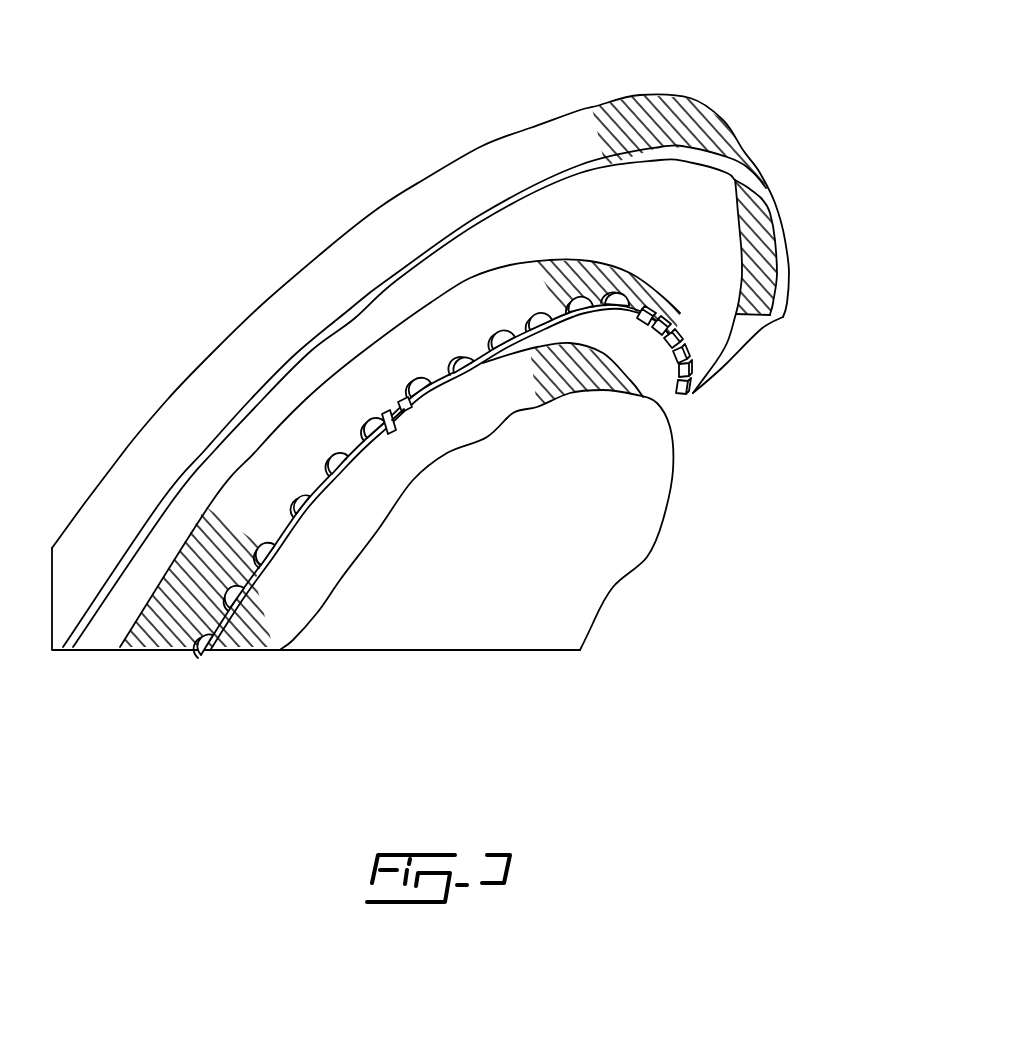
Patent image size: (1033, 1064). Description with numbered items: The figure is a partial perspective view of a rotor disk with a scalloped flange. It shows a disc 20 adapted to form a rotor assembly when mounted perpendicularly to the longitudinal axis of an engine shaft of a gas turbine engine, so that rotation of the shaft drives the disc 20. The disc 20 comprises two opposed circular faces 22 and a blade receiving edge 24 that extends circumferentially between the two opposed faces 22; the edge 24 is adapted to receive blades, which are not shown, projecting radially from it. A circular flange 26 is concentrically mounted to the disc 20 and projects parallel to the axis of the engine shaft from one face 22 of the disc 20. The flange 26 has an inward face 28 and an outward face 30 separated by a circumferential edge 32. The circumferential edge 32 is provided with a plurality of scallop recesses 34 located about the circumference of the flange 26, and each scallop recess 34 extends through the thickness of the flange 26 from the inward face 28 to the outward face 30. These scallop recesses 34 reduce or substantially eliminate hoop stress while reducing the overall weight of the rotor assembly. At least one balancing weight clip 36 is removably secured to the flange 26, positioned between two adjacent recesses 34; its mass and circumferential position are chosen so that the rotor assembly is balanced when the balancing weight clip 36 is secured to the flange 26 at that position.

The disc 20 is at (788, 177).
The circular faces 22 is at (222, 328).
The blade receiving edge 24 is at (582, 132).
The circular flange 26 is at (260, 497).
The inward face 28 is at (527, 347).
The outward face 30 is at (487, 313).
The circumferential edge 32 is at (360, 460).
The scallop recesses 34 is at (418, 385).
The balancing weight clip 36 is at (397, 427).